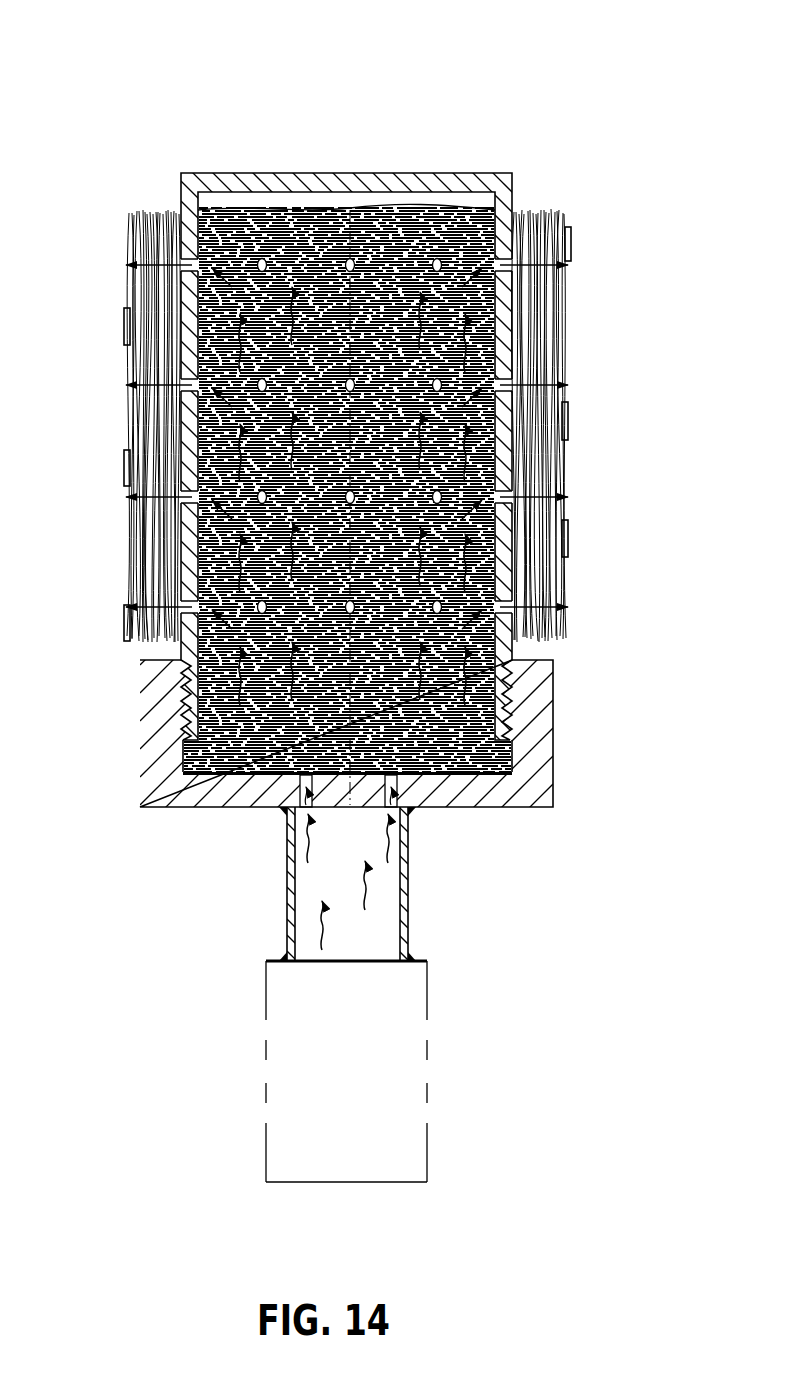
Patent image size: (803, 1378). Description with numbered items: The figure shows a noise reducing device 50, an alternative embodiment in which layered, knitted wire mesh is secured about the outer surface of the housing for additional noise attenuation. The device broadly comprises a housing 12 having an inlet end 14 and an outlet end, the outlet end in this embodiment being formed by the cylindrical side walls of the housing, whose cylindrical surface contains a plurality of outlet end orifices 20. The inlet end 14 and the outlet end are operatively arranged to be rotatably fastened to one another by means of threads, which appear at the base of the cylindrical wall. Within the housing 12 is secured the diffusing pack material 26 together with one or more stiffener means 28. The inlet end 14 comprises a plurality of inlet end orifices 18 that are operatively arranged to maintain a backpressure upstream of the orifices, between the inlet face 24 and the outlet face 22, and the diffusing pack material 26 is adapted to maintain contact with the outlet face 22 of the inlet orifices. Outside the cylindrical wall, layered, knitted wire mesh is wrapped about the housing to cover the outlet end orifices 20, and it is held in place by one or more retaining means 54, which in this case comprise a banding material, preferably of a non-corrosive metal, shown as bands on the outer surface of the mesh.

The noise reducing device 50 is at (140, 105).
The housing 12 is at (177, 651).
The inlet end 14 is at (435, 920).
The inlet end orifice 18 is at (305, 785).
The outlet end orifice 20 is at (182, 262).
The outlet face 22 is at (183, 762).
The inlet face 24 is at (340, 815).
The diffusing pack material 26 is at (370, 464).
The stiffener means 28 is at (480, 792).
The retaining means 54 is at (124, 318).